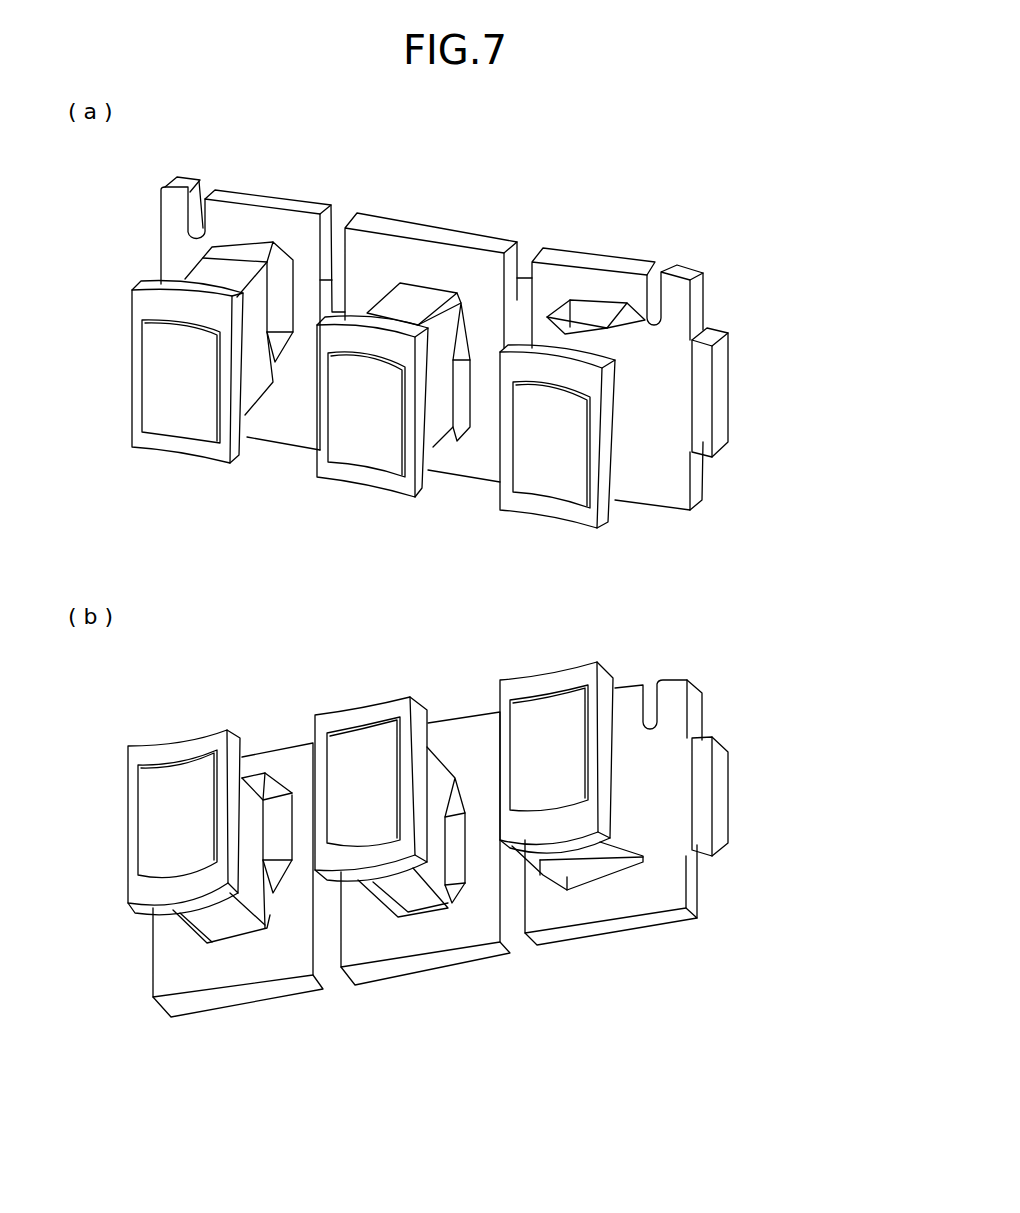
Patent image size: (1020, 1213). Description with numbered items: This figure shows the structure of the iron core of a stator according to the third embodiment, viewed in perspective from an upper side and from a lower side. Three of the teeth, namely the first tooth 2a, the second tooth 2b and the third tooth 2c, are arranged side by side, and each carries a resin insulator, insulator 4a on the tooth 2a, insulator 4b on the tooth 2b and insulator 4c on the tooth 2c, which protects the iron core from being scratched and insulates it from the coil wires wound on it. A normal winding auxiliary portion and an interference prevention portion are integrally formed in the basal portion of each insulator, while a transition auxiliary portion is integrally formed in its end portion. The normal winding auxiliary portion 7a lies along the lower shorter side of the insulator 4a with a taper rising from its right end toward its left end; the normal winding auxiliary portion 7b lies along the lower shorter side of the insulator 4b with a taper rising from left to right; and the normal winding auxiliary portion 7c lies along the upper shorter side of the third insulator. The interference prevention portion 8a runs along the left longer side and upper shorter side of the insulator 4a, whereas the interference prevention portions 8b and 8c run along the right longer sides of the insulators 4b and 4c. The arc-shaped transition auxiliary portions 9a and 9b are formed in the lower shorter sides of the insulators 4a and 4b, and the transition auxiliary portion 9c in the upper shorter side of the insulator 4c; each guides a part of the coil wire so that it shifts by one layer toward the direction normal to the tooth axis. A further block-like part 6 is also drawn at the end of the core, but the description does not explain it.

The tooth 2a is at (581, 228).
The tooth 2b is at (413, 196).
The tooth 2c is at (238, 166).
The insulator 4a is at (625, 262).
The insulator 4b is at (462, 236).
The insulator 4c is at (311, 206).
The protrusion 6 is at (726, 414).
The normal winding auxiliary portion 7a is at (628, 870).
The normal winding auxiliary portion 7b is at (427, 907).
The normal winding auxiliary portion 7c is at (253, 263).
The interference prevention portion 8a is at (550, 340).
The interference prevention portion 8b is at (467, 382).
The interference prevention portion 8c is at (292, 297).
The transition auxiliary portion 9a is at (568, 843).
The transition auxiliary portion 9b is at (372, 880).
The transition auxiliary portion 9c is at (187, 282).